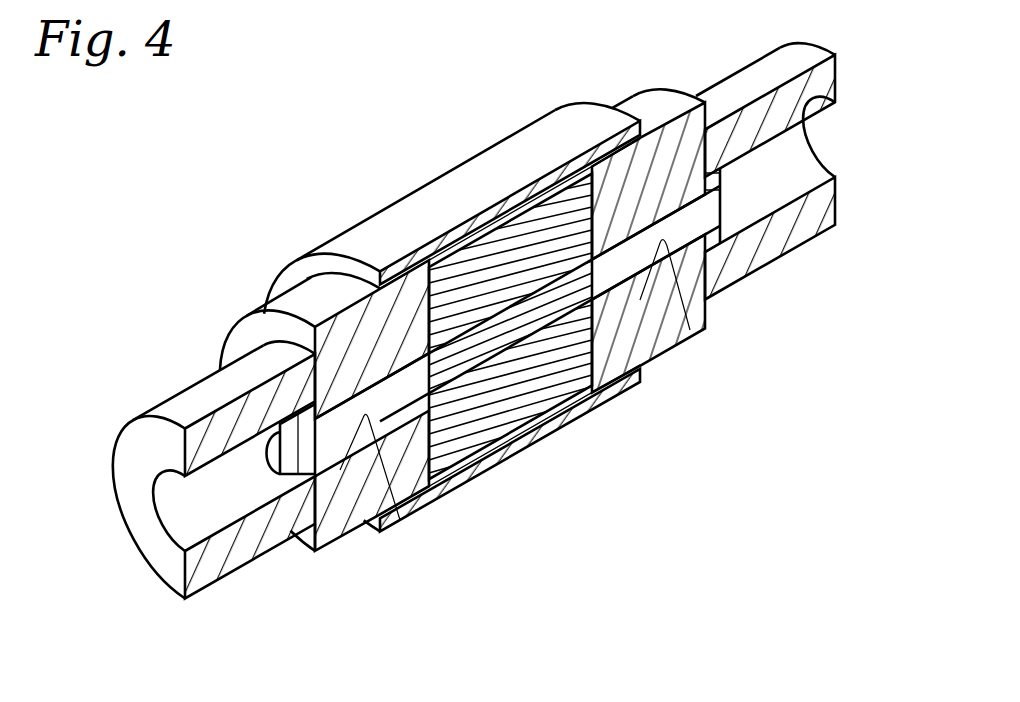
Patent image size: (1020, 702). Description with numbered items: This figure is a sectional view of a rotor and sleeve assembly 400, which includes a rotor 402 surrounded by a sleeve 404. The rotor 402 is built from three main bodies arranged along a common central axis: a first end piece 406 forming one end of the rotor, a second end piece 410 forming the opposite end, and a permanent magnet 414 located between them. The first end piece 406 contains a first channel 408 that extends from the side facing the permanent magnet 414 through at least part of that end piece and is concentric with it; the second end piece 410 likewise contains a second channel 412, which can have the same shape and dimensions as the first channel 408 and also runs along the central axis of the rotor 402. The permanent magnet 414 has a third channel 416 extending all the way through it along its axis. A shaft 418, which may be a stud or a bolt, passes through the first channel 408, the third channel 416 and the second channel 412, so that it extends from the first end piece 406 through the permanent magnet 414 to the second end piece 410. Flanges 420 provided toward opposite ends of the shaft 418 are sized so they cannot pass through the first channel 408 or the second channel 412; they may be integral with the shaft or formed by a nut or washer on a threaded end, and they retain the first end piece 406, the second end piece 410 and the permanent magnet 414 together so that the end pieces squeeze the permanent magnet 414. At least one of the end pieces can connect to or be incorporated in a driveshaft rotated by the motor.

The rotor and sleeve assembly 400 is at (308, 190).
The rotor 402 is at (192, 367).
The sleeve 404 is at (513, 157).
The first end piece 406 is at (220, 553).
The first channel 408 is at (393, 497).
The second end piece 410 is at (795, 230).
The second channel 412 is at (700, 318).
The permanent magnet 414 is at (547, 387).
The third channel 416 is at (455, 400).
The shaft 418 is at (650, 350).
The flanges 420 is at (340, 505).